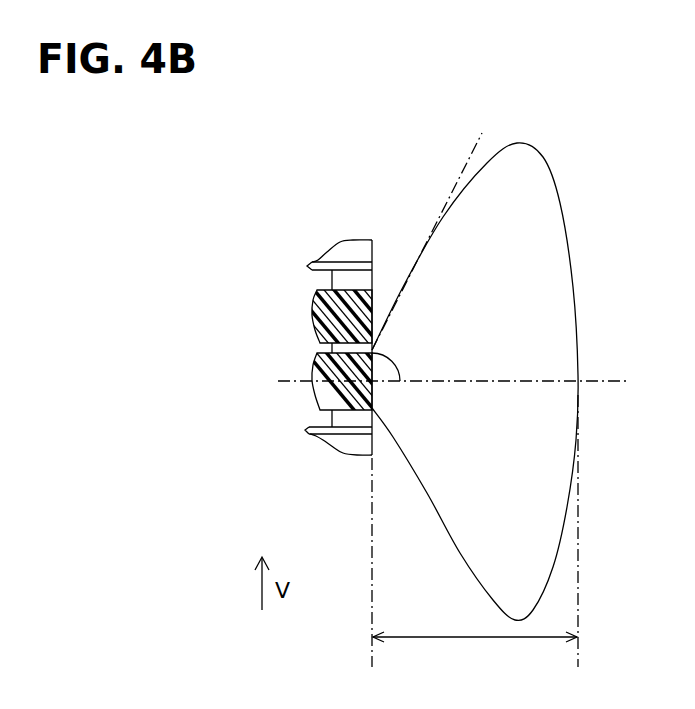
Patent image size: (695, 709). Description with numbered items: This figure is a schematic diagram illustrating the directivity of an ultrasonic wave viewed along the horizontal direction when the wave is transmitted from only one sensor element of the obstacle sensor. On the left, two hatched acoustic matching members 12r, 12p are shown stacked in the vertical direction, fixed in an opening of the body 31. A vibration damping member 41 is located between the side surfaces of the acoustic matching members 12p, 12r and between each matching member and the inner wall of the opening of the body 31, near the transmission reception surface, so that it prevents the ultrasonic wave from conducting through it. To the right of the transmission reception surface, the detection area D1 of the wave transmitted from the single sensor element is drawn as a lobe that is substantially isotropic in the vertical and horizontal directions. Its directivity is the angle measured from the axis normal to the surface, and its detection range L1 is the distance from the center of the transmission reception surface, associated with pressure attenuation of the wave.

The acoustic matching member 12r is at (313, 307).
The acoustic matching member 12p is at (313, 372).
The body 31 is at (360, 260).
The vibration damping member 41 is at (338, 278).
The detection area D1 is at (537, 173).
The detection range L1 is at (475, 532).